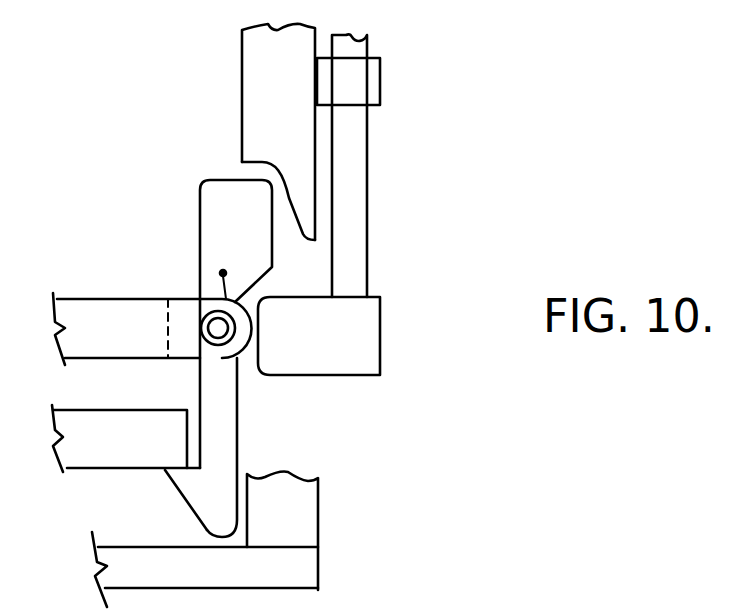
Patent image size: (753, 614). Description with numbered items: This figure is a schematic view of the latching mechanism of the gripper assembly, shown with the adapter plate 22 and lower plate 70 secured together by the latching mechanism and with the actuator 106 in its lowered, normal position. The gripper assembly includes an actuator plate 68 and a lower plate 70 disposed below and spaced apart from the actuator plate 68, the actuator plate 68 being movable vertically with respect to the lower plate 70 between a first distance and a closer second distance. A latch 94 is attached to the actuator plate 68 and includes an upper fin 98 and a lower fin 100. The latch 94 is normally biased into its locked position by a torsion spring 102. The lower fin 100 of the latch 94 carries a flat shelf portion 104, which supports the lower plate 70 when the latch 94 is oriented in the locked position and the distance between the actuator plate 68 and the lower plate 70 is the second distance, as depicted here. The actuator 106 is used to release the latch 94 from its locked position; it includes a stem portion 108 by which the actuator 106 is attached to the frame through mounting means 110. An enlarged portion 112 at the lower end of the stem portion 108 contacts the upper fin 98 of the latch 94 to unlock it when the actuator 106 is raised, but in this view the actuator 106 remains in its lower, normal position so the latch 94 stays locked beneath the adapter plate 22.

The lower adapter plate 22 is at (303, 570).
The actuator plate 68 is at (108, 310).
The lower plate 70 is at (82, 458).
The latch 94 is at (238, 437).
The upper fin 98 is at (213, 228).
The lower fin 100 is at (197, 505).
The torsion spring 102 is at (217, 332).
The flat shelf portion 104 is at (167, 475).
The actuator 106 is at (368, 152).
The stem portion 108 is at (353, 208).
The mounting means 110 is at (372, 85).
The enlarged portion 112 is at (372, 335).